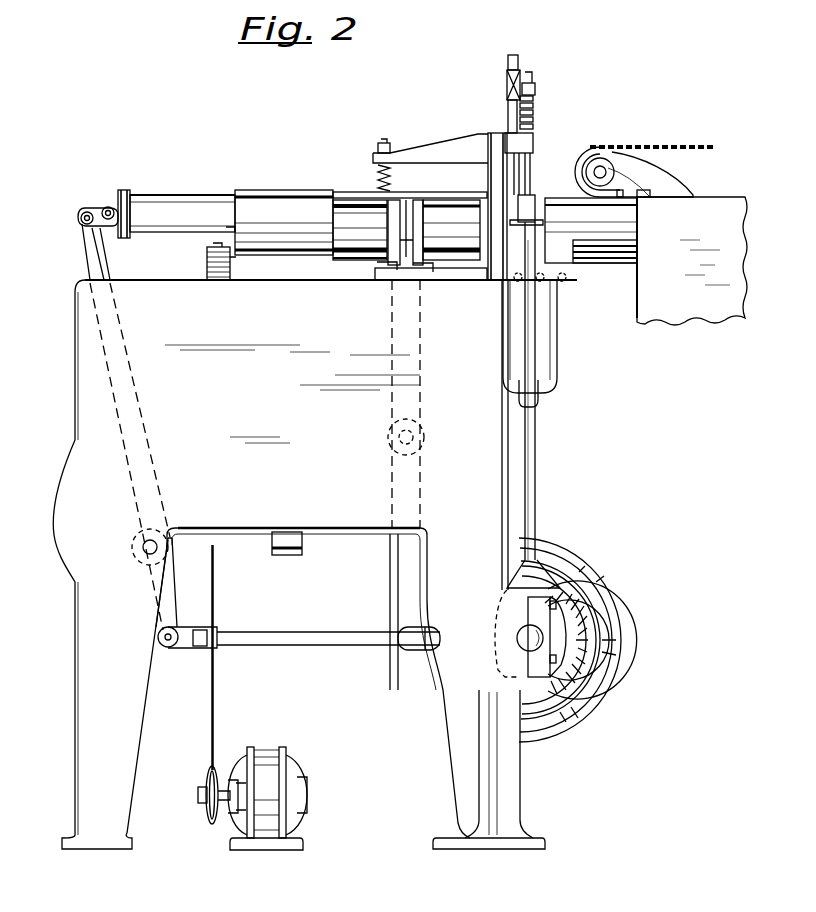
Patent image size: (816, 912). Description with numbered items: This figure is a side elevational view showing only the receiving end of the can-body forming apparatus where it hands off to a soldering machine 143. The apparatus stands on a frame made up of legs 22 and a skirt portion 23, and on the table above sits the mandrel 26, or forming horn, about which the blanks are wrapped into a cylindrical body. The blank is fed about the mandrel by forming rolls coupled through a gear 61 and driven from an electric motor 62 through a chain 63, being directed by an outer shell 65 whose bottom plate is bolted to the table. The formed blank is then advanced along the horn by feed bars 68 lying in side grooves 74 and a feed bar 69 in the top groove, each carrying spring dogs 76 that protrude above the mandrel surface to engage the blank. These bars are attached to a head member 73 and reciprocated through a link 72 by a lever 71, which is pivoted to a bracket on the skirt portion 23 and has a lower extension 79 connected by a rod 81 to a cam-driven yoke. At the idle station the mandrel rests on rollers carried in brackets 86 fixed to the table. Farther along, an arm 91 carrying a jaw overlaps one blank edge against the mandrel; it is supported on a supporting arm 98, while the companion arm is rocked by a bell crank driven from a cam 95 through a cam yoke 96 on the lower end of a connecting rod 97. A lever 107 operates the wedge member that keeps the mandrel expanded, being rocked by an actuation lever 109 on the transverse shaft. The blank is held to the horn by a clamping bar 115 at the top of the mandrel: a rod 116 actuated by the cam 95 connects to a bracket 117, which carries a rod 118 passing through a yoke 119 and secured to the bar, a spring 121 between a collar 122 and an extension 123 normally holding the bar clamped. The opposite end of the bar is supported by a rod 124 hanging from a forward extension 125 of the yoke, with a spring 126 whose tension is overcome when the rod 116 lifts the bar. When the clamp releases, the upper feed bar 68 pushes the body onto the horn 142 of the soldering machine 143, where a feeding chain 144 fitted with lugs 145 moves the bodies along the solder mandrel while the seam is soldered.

The legs 22 is at (462, 778).
The skirt portion 23 is at (347, 528).
The mandrel 26 is at (352, 210).
The gear 61 is at (207, 252).
The electric motor 62 is at (278, 760).
The chain 63 is at (215, 692).
The outer shell 65 is at (292, 190).
The feed bars 68 is at (183, 229).
The feed bar 69 is at (212, 196).
The lever 71 is at (93, 257).
The link 72 is at (100, 208).
The head member 73 is at (125, 190).
The side grooves 74 is at (448, 222).
The spring dogs 76 is at (342, 260).
The lower extension 79 is at (172, 598).
The rod 81 is at (327, 634).
The brackets 86 is at (375, 265).
The arm 91 is at (535, 202).
The cam 95 is at (585, 608).
The cam yoke 96 is at (552, 590).
The connecting rod 97 is at (537, 467).
The supporting arm 98 is at (545, 247).
The lever 107 is at (418, 346).
The actuation lever 109 is at (398, 567).
The clamping bar 115 is at (415, 192).
The rod 116 is at (508, 119).
The bracket 117 is at (518, 66).
The rod 118 is at (530, 173).
The yoke 119 is at (535, 142).
The spring 121 is at (533, 100).
The collar 122 is at (533, 119).
The extension 123 is at (535, 89).
The rod 124 is at (385, 142).
The forward extension 125 is at (433, 150).
The spring 126 is at (391, 178).
The horn 142 is at (617, 264).
The soldering machine 143 is at (723, 212).
The feeding chain 144 is at (695, 146).
The lugs 145 is at (648, 146).